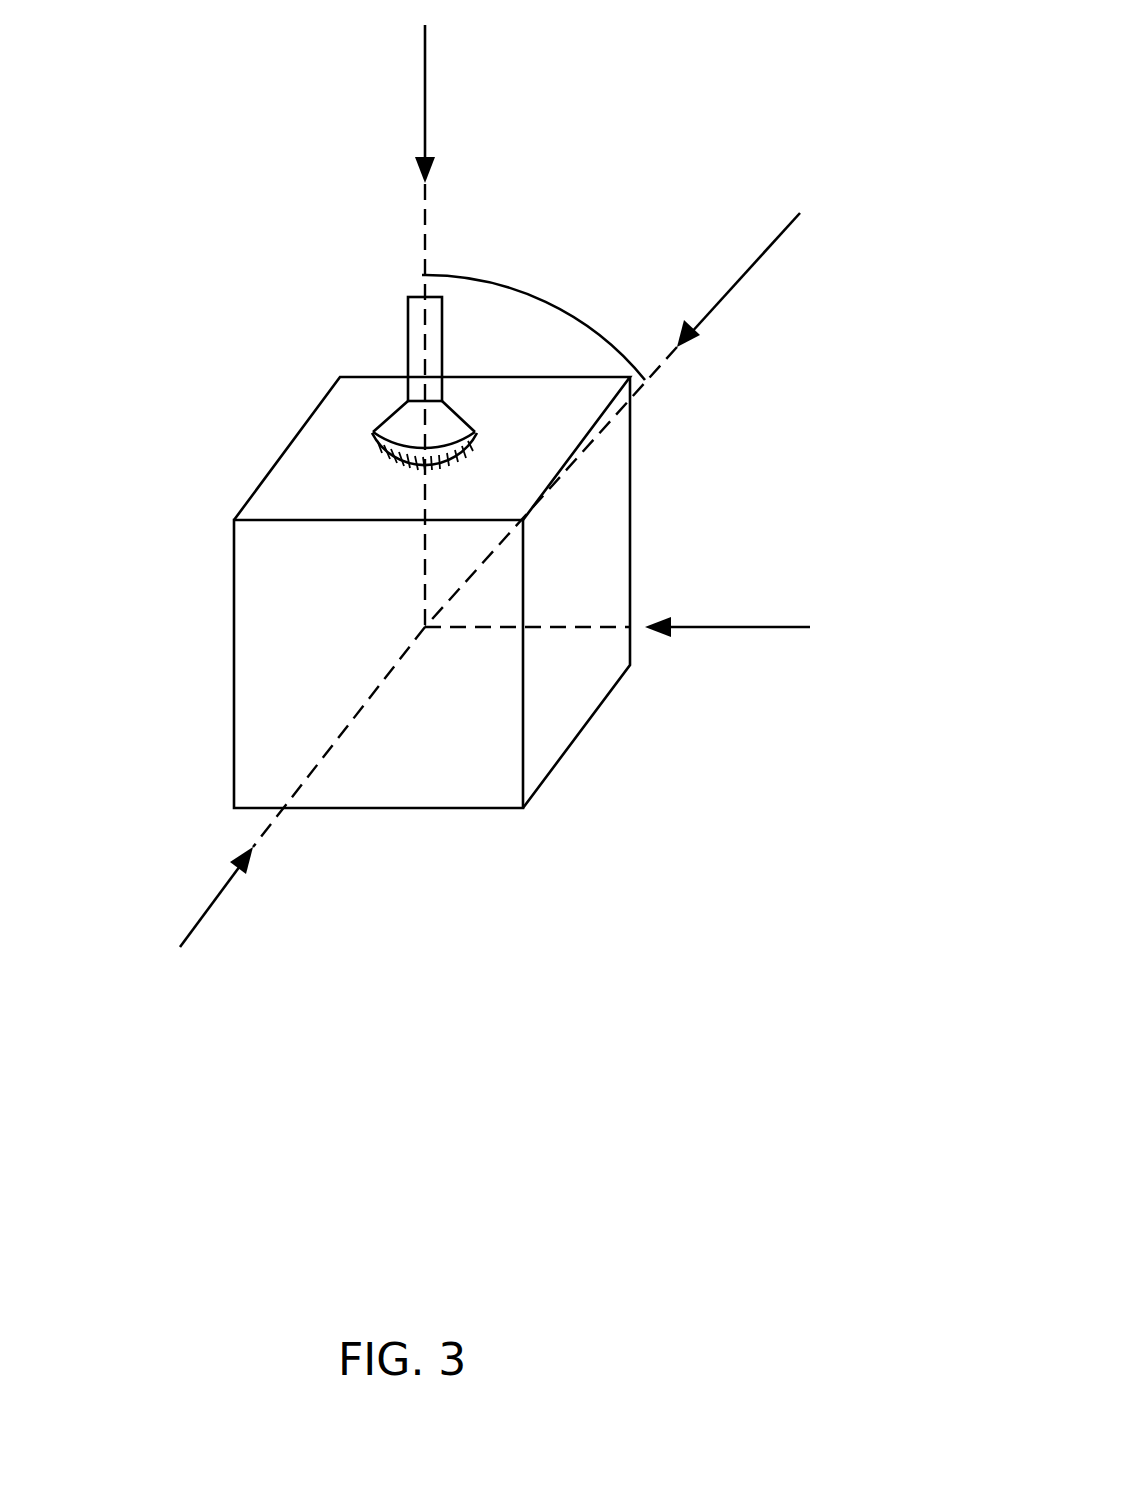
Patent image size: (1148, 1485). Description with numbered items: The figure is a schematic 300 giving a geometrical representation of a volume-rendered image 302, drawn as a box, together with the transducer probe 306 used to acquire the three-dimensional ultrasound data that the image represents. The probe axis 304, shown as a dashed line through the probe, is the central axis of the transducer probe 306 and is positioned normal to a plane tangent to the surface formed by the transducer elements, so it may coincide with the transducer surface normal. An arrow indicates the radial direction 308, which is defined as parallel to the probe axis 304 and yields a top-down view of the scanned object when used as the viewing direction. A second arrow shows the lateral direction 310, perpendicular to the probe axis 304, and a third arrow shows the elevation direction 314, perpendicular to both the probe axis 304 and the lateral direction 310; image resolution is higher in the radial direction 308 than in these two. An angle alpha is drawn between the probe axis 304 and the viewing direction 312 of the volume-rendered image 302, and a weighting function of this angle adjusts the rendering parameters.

The schematic 300 is at (684, 76).
The volume-rendered image 302 is at (233, 642).
The probe axis 304 is at (423, 213).
The transducer probe 306 is at (408, 348).
The radial direction 308 is at (425, 85).
The lateral direction 310 is at (750, 628).
The viewing direction 312 is at (758, 258).
The elevation direction 314 is at (213, 903).